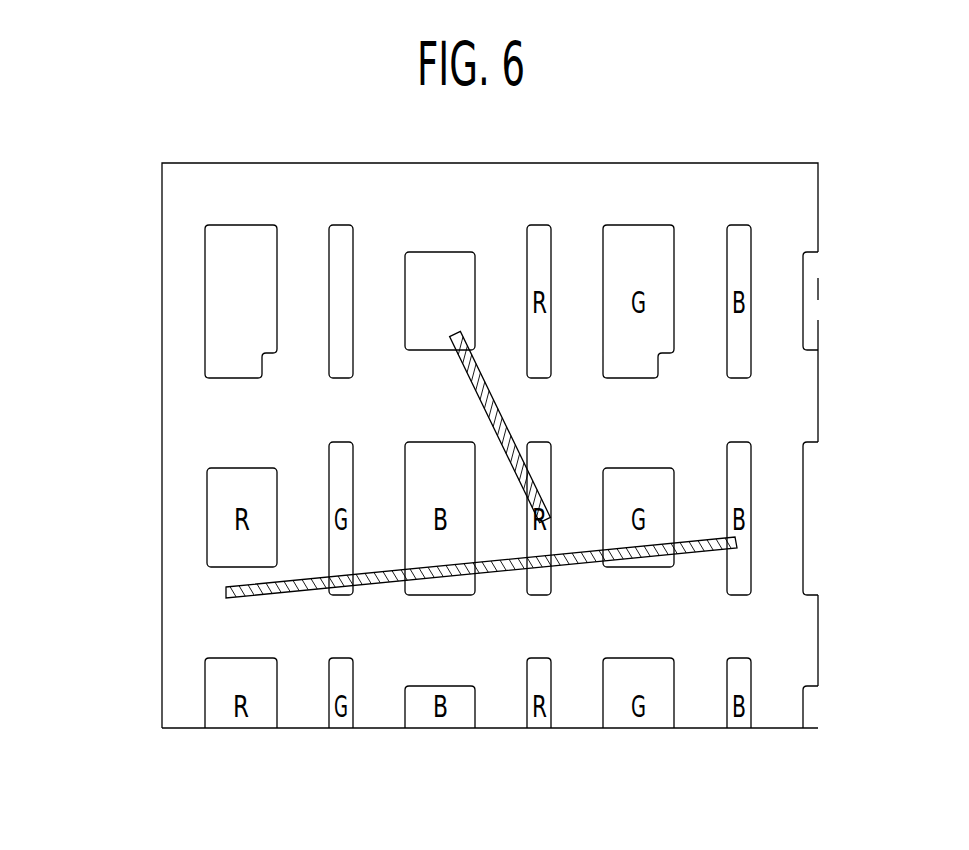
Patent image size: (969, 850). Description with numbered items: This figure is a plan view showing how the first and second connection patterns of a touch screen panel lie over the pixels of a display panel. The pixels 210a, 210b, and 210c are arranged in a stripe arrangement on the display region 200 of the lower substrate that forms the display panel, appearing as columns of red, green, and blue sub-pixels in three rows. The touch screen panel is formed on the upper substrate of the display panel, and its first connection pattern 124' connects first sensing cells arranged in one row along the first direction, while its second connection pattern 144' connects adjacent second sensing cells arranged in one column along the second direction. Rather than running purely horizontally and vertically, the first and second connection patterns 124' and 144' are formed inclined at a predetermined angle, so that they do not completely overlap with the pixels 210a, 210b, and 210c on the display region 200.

The display region 200 is at (128, 688).
The pixel 210a is at (235, 225).
The pixel 210b is at (340, 225).
The pixel 210c is at (437, 252).
The second connection pattern 144' is at (545, 426).
The first connection pattern 124' is at (481, 600).